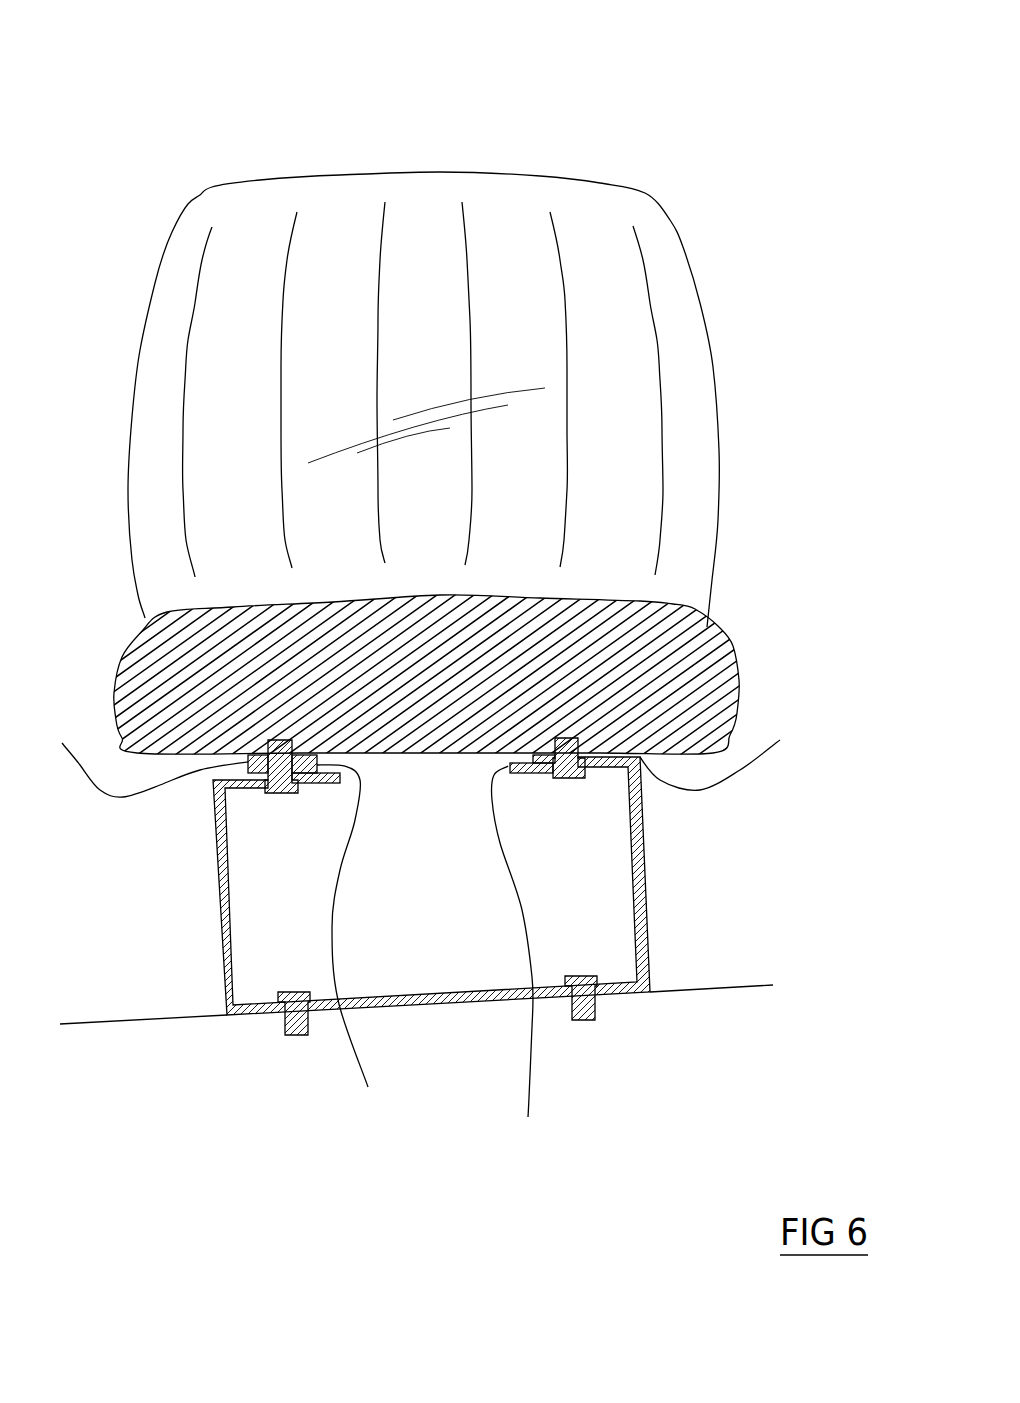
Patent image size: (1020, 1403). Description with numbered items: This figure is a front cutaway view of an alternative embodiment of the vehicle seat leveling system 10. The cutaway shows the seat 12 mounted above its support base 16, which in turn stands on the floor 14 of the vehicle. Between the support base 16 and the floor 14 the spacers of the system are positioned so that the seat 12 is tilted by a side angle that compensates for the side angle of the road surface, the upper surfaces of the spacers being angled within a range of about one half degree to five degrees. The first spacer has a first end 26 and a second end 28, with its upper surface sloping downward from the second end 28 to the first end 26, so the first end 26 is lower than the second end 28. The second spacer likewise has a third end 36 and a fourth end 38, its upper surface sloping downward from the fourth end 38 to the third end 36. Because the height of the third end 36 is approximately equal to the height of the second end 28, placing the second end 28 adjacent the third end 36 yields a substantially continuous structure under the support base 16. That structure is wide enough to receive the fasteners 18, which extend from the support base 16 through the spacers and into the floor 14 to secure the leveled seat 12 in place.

The vehicle seat leveling system 10 is at (767, 90).
The seat 12 is at (705, 323).
The floor 14 is at (713, 990).
The support base 16 is at (227, 938).
The fasteners 18 is at (303, 1037).
The first end 26 is at (738, 750).
The second end 28 is at (522, 963).
The third end 36 is at (356, 950).
The fourth end 38 is at (139, 747).